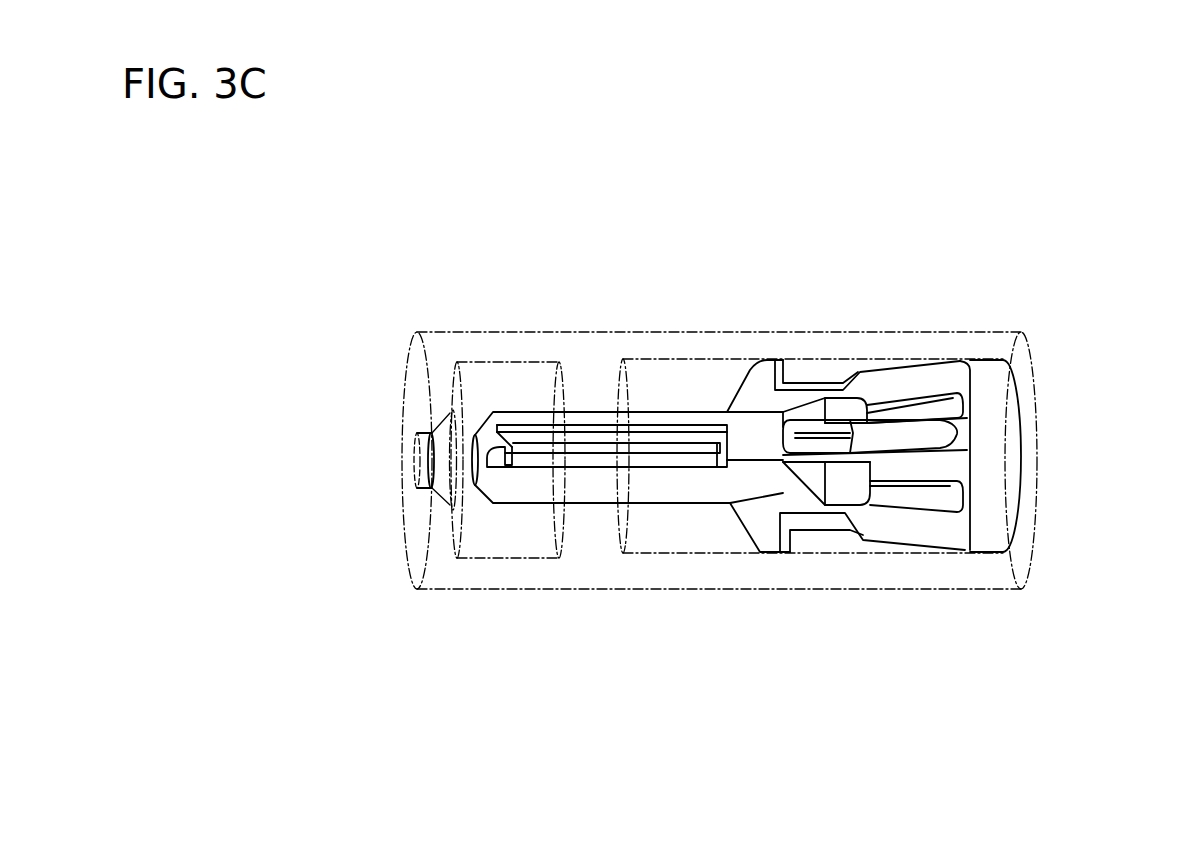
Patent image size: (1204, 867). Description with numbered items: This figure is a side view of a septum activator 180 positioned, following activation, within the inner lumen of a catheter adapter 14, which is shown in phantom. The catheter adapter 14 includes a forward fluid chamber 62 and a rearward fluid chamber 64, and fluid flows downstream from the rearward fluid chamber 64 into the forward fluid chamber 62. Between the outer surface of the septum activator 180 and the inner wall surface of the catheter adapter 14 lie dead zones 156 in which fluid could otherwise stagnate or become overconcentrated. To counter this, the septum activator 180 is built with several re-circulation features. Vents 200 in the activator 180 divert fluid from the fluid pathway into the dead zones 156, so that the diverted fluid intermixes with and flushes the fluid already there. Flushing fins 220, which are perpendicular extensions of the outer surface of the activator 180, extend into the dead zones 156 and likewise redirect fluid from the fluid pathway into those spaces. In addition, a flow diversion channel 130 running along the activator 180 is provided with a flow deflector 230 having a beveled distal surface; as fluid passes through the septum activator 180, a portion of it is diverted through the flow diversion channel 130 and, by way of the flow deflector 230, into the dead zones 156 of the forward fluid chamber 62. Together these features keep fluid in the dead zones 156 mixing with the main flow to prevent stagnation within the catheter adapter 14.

The catheter adapter 14 is at (512, 592).
The forward fluid chamber 62 is at (477, 361).
The rearward fluid chamber 64 is at (724, 553).
The flow diversion channel 130 is at (583, 437).
The dead zones 156 is at (825, 370).
The septum activator 180 is at (1082, 341).
The vents 200 is at (937, 412).
The flushing fins 220 is at (762, 383).
The flow deflector 230 is at (518, 445).